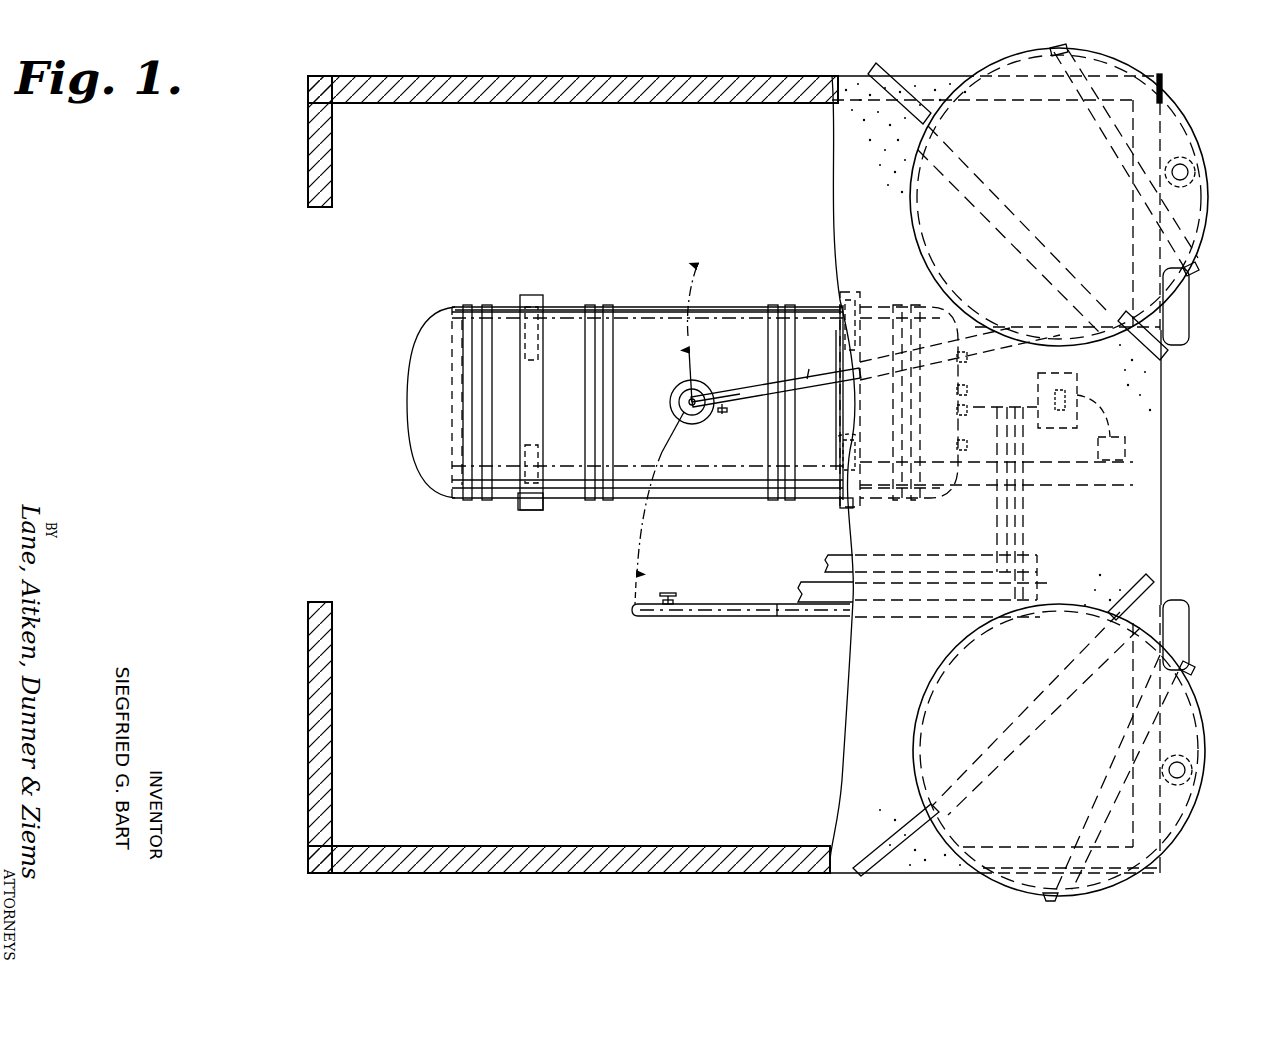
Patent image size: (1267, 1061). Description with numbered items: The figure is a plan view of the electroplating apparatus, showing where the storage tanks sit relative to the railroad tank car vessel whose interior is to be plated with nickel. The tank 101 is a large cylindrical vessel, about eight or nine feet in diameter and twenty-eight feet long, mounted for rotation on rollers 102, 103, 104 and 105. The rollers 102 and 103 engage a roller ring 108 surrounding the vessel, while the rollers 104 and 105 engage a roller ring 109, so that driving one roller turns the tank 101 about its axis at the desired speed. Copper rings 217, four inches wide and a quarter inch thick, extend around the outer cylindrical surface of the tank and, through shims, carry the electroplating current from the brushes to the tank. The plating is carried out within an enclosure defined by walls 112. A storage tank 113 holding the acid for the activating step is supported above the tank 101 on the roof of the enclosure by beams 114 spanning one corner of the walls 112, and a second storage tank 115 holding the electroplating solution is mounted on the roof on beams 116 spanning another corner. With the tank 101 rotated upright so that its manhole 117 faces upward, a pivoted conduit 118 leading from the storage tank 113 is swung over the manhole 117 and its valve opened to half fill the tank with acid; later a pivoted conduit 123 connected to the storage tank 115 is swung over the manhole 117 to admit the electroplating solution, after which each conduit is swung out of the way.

The tank 101 is at (709, 498).
The roller 102 is at (840, 438).
The roller 103 is at (857, 292).
The roller 104 is at (504, 498).
The roller 105 is at (565, 309).
The roller ring 108 is at (842, 418).
The roller ring 109 is at (531, 295).
The walls 112 is at (672, 104).
The storage tank 113 is at (1172, 122).
The beams 114 is at (1115, 180).
The second storage tank 115 is at (1204, 801).
The beams 116 is at (1088, 815).
The manhole 117 is at (670, 395).
The pivoted conduit 118 is at (751, 391).
The pivoted conduit 123 is at (737, 613).
The copper rings 217 is at (486, 305).